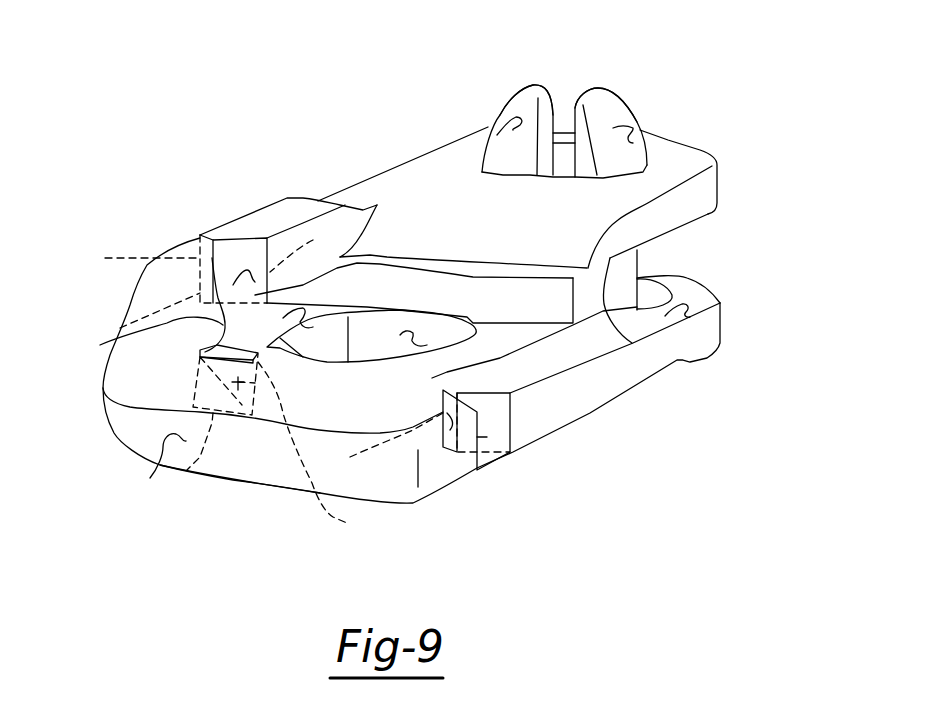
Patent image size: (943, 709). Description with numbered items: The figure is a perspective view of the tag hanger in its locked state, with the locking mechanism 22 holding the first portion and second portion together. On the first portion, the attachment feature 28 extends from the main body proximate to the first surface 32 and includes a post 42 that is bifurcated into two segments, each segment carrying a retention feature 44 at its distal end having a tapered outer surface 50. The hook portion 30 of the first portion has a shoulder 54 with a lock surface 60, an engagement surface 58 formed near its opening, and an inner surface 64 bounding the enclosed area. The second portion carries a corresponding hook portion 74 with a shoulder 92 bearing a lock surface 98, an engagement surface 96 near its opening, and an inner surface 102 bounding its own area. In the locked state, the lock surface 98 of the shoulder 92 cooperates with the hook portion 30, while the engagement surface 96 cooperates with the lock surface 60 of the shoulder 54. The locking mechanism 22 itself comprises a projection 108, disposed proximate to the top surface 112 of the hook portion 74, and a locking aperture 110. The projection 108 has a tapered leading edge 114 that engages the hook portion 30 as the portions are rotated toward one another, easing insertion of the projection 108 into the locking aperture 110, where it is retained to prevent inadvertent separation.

The locking mechanism 22 is at (201, 389).
The attachment feature 28 is at (634, 284).
The hook portion 30 is at (128, 319).
The first surface 32 is at (665, 312).
The post 42 is at (630, 108).
The retention feature 44 is at (536, 88).
The tapered outer surface 50 is at (507, 117).
The shoulder 54 is at (493, 422).
The engagement surface 58 is at (140, 257).
The lock surface 60 is at (384, 441).
The inner surface 64 is at (420, 352).
The hook portion 74 is at (266, 477).
The shoulder 92 is at (258, 221).
The engagement surface 96 is at (487, 437).
The lock surface 98 is at (283, 256).
The inner surface 102 is at (310, 325).
The projection 108 is at (185, 475).
The locking aperture 110 is at (320, 283).
The top surface 112 is at (152, 466).
The tapered leading edge 114 is at (322, 448).